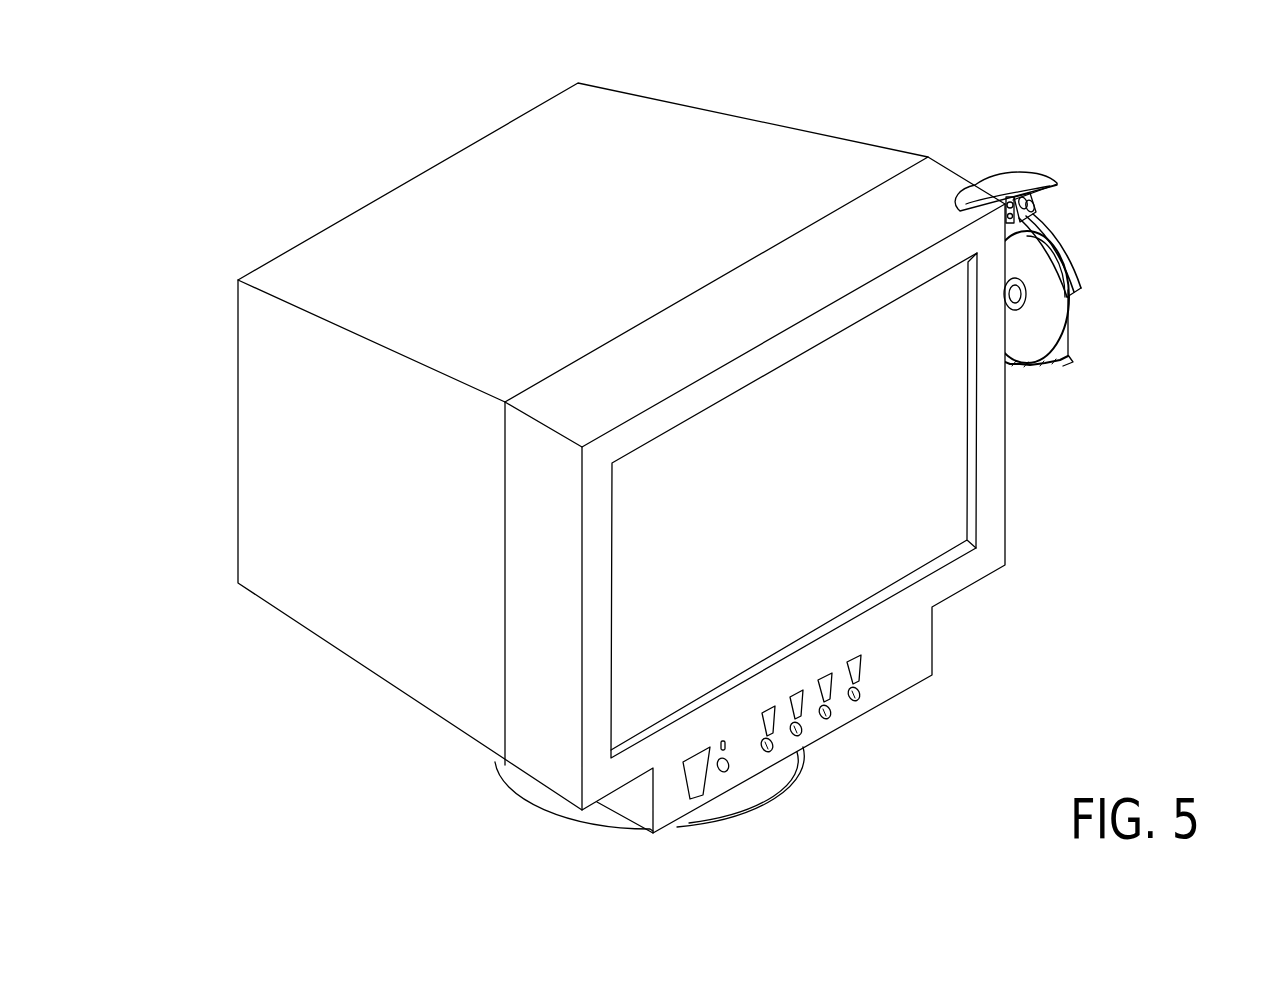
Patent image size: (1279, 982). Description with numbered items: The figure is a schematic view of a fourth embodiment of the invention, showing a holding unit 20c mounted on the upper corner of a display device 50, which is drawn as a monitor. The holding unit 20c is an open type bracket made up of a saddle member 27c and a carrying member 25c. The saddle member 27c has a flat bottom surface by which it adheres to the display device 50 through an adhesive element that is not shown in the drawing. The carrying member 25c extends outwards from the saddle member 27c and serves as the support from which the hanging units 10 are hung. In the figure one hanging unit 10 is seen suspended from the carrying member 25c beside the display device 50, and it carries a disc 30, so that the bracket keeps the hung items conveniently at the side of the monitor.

The hanging unit 10 is at (717, 458).
The holding unit 20c is at (1089, 203).
The carrying member 25c is at (1092, 279).
The saddle member 27c is at (1000, 177).
The compact disc 30 is at (1038, 325).
The display device 50 is at (668, 631).